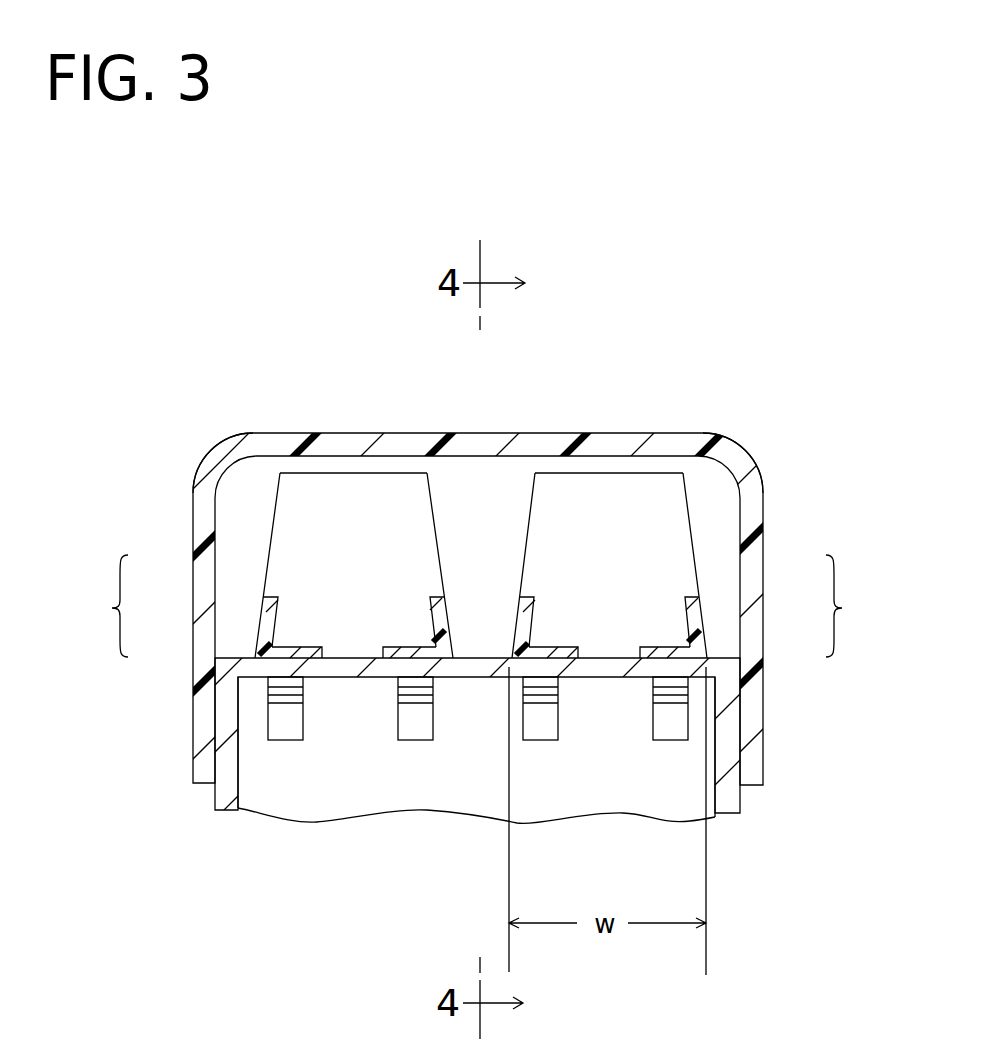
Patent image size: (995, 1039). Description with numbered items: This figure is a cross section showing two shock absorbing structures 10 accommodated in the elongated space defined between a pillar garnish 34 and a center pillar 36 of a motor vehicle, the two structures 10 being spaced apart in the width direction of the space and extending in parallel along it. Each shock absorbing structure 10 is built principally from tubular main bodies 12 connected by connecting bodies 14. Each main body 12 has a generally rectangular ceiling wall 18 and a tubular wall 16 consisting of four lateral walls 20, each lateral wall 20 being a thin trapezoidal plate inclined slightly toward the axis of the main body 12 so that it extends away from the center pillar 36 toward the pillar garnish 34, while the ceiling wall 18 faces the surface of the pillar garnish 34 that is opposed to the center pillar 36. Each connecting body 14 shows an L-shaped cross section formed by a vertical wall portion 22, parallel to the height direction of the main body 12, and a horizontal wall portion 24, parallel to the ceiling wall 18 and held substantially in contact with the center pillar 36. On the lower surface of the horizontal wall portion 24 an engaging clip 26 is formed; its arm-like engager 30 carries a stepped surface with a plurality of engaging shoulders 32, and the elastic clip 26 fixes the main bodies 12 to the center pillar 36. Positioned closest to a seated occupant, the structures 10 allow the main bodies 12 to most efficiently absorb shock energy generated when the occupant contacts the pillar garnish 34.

The shock absorbing structure 10 is at (268, 487).
The tubular main body 12 is at (288, 460).
The connecting body 14 is at (477, 606).
The tubular wall 16 is at (197, 478).
The ceiling wall 18 is at (345, 473).
The lateral wall 20 is at (300, 558).
The vertical wall portion 22 is at (268, 608).
The horizontal wall portion 24 is at (278, 652).
The engaging clip 26 is at (282, 757).
The engager 30 is at (543, 728).
The engaging shoulder 32 is at (535, 683).
The pillar garnish 34 is at (738, 460).
The center pillar 36 is at (197, 733).